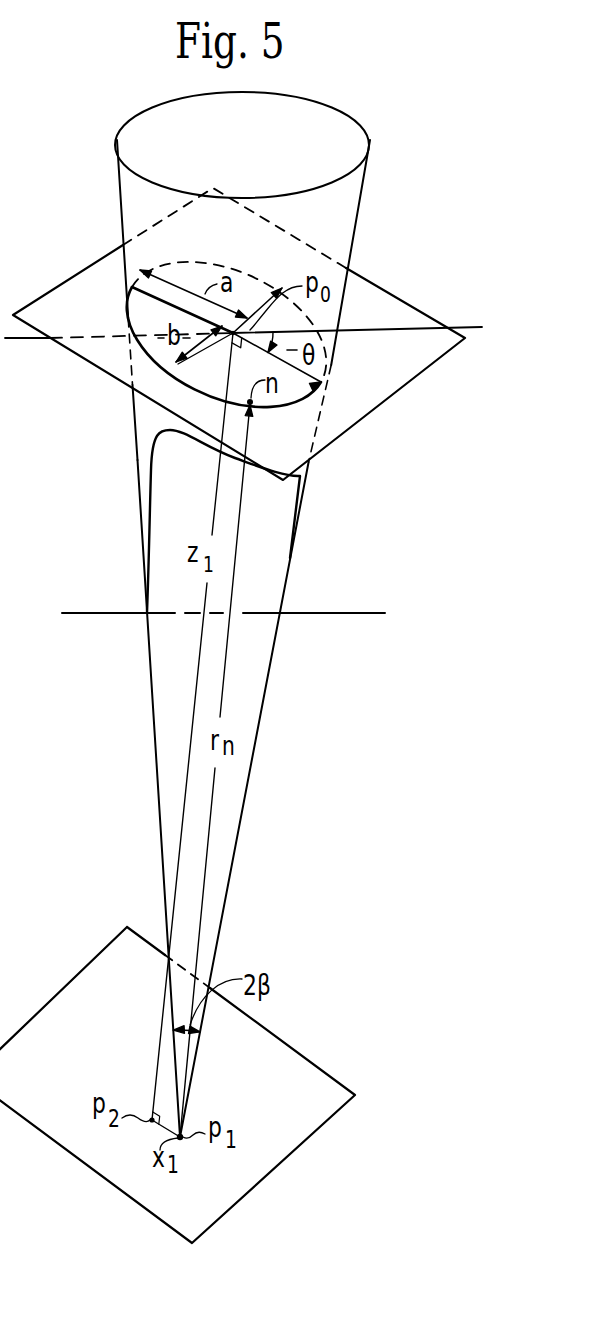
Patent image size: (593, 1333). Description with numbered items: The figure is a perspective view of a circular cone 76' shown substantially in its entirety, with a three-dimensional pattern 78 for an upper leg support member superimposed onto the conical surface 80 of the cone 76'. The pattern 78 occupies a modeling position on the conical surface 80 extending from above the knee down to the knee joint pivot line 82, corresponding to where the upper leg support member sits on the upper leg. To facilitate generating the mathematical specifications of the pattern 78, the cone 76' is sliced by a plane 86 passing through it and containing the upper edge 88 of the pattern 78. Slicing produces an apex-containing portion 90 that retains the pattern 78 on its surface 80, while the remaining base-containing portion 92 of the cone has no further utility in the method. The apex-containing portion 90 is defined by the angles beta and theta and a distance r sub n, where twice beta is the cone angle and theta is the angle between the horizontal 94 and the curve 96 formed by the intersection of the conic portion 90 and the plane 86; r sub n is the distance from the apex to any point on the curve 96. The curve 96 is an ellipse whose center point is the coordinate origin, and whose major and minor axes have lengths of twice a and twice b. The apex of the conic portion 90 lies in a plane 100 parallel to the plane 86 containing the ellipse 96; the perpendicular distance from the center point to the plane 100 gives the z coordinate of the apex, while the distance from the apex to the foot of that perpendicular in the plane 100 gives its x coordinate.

The circular cone 76' is at (367, 252).
The three-dimensional pattern 78 is at (143, 449).
The conical surface 80 is at (366, 133).
The knee joint pivot line 82 is at (331, 612).
The plane 86 is at (413, 371).
The upper edge 88 is at (128, 394).
The apex-containing portion 90 is at (245, 712).
The base-containing portion 92 is at (133, 212).
The horizontal 94 is at (478, 327).
The curve 96 is at (226, 262).
The plane 100 is at (294, 1058).